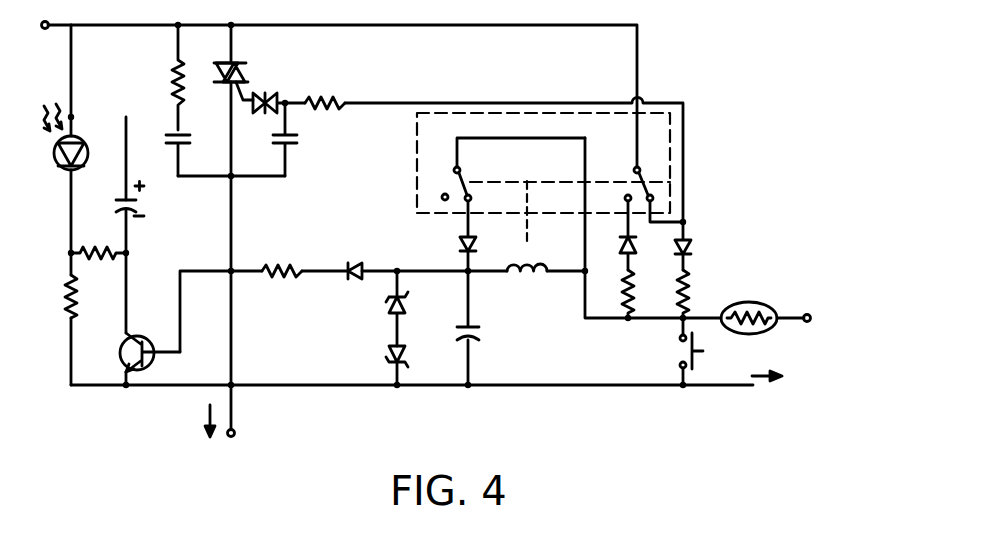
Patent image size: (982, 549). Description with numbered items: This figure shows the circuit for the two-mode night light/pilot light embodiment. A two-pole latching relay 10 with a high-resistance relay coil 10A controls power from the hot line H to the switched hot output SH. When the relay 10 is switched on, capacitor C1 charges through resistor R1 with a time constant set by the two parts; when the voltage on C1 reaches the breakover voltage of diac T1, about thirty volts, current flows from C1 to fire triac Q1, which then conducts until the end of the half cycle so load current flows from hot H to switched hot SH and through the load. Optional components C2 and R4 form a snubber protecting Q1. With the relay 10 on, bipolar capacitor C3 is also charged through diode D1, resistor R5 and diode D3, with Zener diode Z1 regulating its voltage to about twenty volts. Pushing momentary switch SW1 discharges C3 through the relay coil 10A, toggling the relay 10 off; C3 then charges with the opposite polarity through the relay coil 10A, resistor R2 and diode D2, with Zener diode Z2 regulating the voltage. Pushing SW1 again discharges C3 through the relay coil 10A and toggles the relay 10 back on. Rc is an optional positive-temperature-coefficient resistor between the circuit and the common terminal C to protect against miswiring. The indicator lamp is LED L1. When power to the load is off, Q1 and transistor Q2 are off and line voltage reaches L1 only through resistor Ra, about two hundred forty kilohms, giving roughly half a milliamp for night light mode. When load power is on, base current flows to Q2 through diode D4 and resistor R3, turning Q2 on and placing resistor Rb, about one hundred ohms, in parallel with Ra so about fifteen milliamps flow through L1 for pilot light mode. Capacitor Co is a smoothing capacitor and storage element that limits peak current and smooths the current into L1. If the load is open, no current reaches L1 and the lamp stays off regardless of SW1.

The two-pole latching relay 10 is at (417, 128).
The relay coil 10A is at (529, 243).
The hot H is at (35, 27).
The common terminal C is at (816, 319).
The switched hot SH is at (546, 417).
The LED L1 is at (57, 144).
The smoothing capacitor Co is at (143, 200).
The resistor Rb is at (98, 244).
The resistor Ra is at (52, 296).
The transistor Q2 is at (151, 355).
The resistor R4 is at (162, 77).
The capacitor C2 is at (192, 153).
The triac Q1 is at (242, 68).
The diac T1 is at (279, 93).
The resistor R1 is at (325, 91).
The capacitor C1 is at (297, 139).
The resistor R3 is at (282, 260).
The diode D4 is at (358, 257).
The Zener diode Z1 is at (383, 308).
The Zener diode Z2 is at (382, 365).
The diode D3 is at (483, 236).
The bipolar capacitor C3 is at (482, 328).
The diode D2 is at (616, 235).
The resistor R2 is at (613, 294).
The diode D1 is at (698, 246).
The resistor R5 is at (700, 294).
The positive-temperature-coefficient resistor Rc is at (756, 310).
The momentary switch SW1 is at (714, 351).